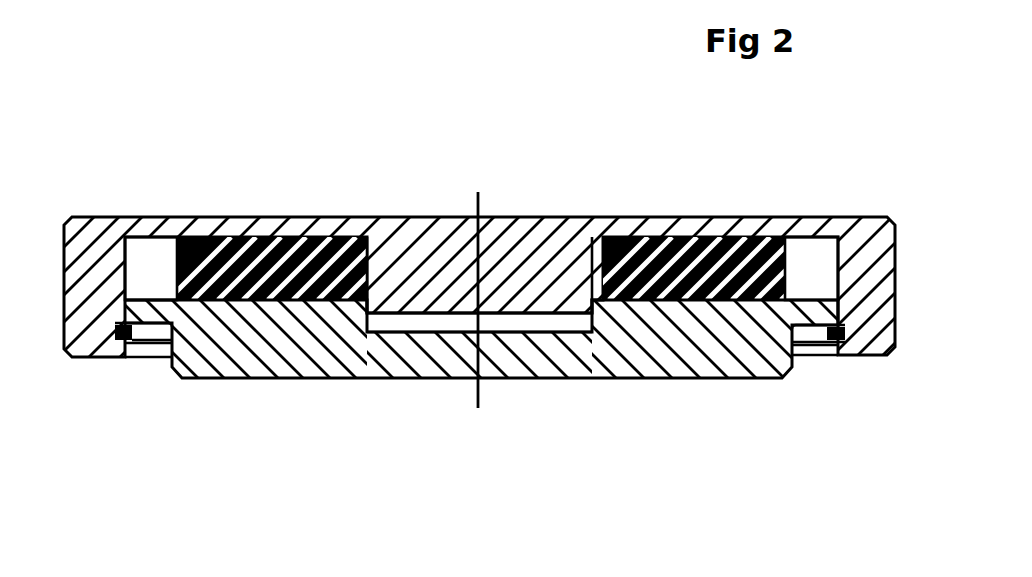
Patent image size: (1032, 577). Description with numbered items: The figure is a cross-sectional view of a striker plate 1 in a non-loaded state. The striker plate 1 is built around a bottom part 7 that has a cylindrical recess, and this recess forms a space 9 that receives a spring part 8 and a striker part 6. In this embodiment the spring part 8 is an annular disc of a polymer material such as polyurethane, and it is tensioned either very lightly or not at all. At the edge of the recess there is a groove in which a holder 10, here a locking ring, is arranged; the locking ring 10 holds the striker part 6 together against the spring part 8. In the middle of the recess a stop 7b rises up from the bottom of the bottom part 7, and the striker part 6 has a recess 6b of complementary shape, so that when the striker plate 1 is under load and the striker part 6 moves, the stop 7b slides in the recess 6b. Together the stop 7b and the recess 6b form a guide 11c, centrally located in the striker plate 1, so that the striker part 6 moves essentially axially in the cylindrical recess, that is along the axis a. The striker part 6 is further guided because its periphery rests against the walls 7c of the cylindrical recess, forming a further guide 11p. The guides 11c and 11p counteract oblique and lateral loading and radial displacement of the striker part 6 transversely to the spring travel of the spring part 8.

The striker plate 1 is at (540, 140).
The striker part 6 is at (667, 358).
The recess 6b is at (515, 333).
The bottom part 7 is at (863, 230).
The stop 7b is at (513, 310).
The walls of the cylindrical recess 7c is at (128, 302).
The spring part 8 is at (263, 258).
The space 9 is at (807, 257).
The holder 10 is at (832, 336).
The guide 11c is at (380, 280).
The further guide 11p is at (142, 298).
The axis a is at (477, 395).